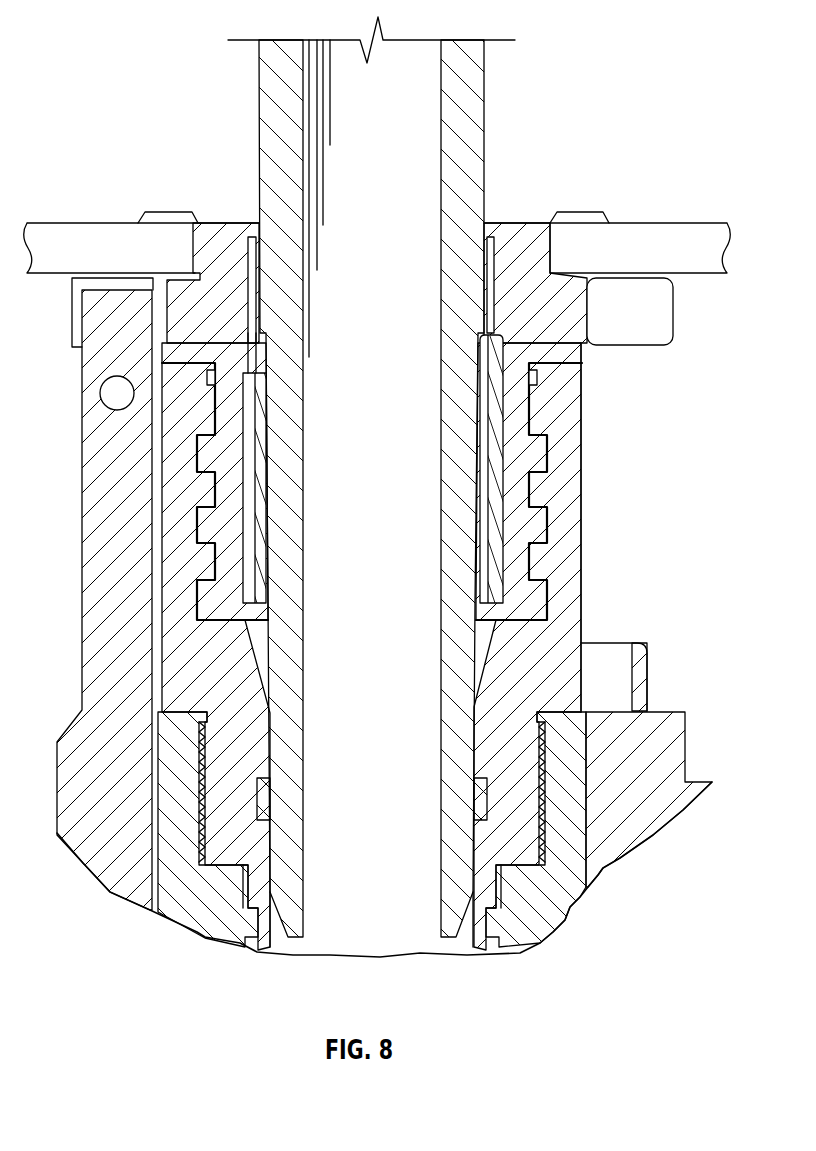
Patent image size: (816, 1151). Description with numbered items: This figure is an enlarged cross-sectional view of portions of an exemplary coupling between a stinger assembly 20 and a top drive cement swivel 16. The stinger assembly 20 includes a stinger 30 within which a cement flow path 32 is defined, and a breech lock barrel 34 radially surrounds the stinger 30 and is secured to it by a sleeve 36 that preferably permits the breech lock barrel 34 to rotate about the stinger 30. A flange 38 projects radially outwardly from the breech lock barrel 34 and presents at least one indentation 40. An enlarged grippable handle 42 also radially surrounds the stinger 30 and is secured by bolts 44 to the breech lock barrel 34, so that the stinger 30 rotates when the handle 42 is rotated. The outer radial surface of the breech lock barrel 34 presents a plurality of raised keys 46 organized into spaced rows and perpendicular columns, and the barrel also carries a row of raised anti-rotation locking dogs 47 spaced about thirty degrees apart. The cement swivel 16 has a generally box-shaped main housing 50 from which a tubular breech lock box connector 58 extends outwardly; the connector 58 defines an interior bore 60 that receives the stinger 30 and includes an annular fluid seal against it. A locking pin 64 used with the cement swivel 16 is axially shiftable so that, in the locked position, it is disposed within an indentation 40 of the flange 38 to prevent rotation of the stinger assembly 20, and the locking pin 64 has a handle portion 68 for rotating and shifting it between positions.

The top drive cement swivel 16 is at (670, 679).
The stinger assembly 20 is at (638, 198).
The stinger 30 is at (300, 868).
The cement flow path 32 is at (357, 914).
The breech lock barrel 34 is at (192, 453).
The sleeve 36 is at (550, 457).
The flange 38 is at (674, 316).
The indentation 40 is at (165, 287).
The grippable handle 42 is at (81, 222).
The bolts 44 is at (158, 212).
The raised keys 46 is at (100, 393).
The anti-rotation locking dogs 47 is at (206, 378).
The main housing 50 is at (674, 742).
The breech lock box connector 58 is at (582, 573).
The interior bore 60 is at (258, 657).
The locking pin 64 is at (98, 697).
The handle portion 68 is at (274, 792).